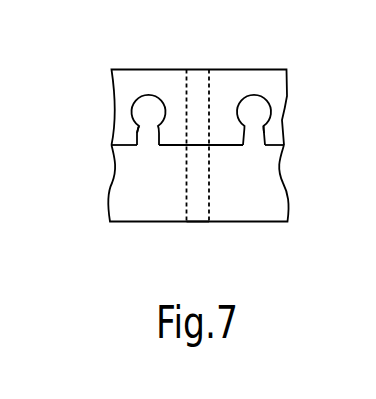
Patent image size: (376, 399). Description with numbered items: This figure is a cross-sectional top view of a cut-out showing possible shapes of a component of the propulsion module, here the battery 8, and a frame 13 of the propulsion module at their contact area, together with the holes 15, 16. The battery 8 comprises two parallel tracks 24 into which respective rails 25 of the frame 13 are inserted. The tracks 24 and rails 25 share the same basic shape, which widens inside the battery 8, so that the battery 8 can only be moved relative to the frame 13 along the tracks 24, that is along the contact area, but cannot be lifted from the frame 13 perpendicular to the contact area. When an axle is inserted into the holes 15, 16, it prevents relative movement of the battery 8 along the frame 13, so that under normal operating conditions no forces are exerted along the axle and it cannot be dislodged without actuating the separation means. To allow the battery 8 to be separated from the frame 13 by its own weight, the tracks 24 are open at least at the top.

The battery 8 is at (111, 73).
The frame 13 is at (100, 188).
The hole 15 is at (191, 210).
The hole 16 is at (196, 62).
The track 24 is at (148, 87).
The rail 25 is at (130, 101).